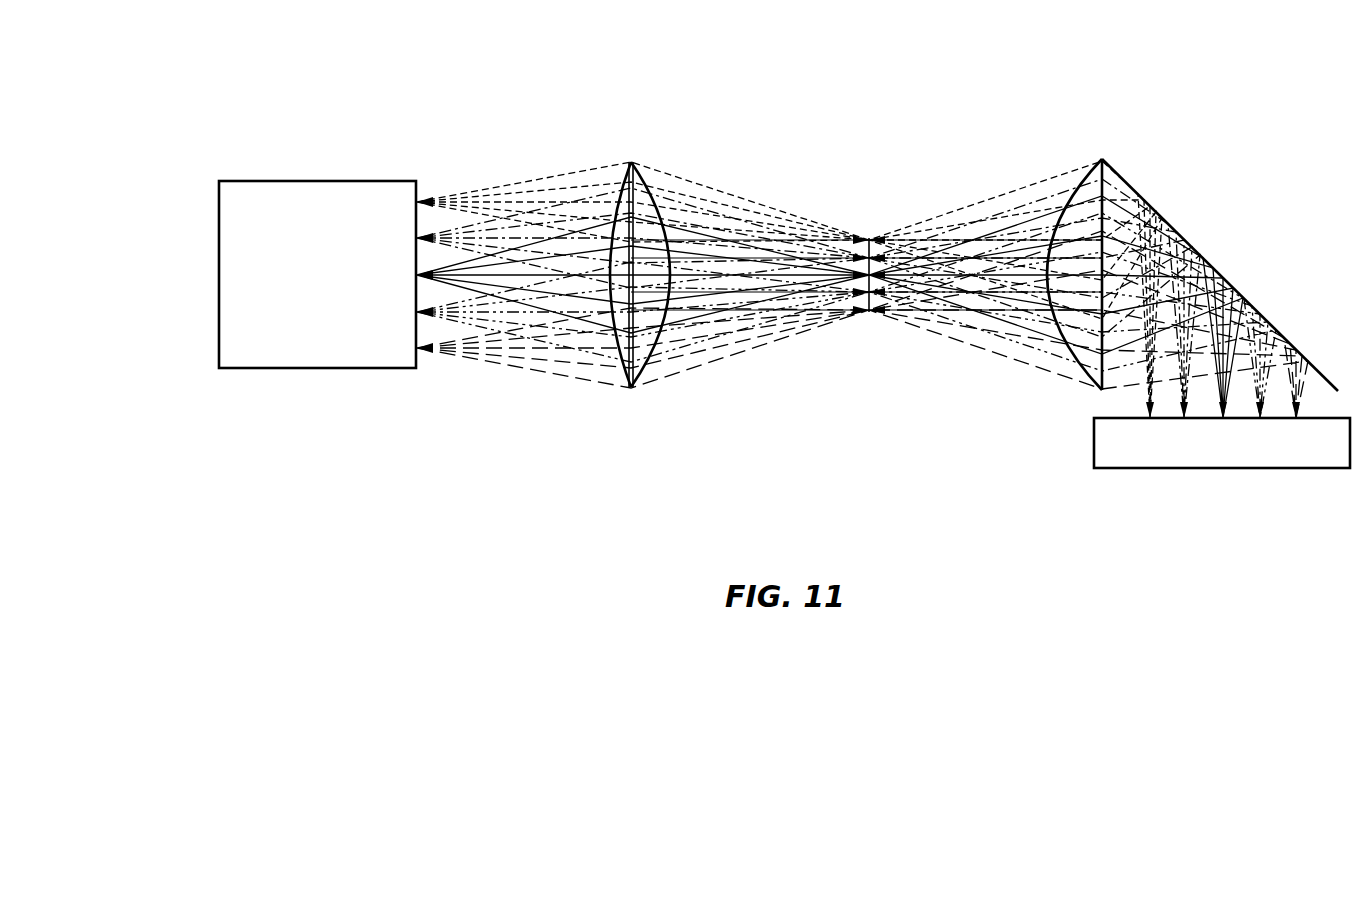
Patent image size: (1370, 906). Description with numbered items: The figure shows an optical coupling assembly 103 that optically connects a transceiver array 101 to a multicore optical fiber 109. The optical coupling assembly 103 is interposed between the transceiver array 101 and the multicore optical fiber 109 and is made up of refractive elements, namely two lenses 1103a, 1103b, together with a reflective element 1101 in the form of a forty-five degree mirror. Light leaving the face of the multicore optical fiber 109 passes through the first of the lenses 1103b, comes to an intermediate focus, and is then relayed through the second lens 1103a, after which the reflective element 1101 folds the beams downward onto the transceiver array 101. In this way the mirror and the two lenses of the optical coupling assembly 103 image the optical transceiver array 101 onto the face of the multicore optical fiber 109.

The optical coupling assembly 103 is at (502, 52).
The multicore optical fiber 109 is at (311, 209).
The lens 1103b is at (643, 188).
The lens 1103a is at (1084, 198).
The reflective element 1101 is at (1228, 277).
The transceiver array 101 is at (1203, 440).